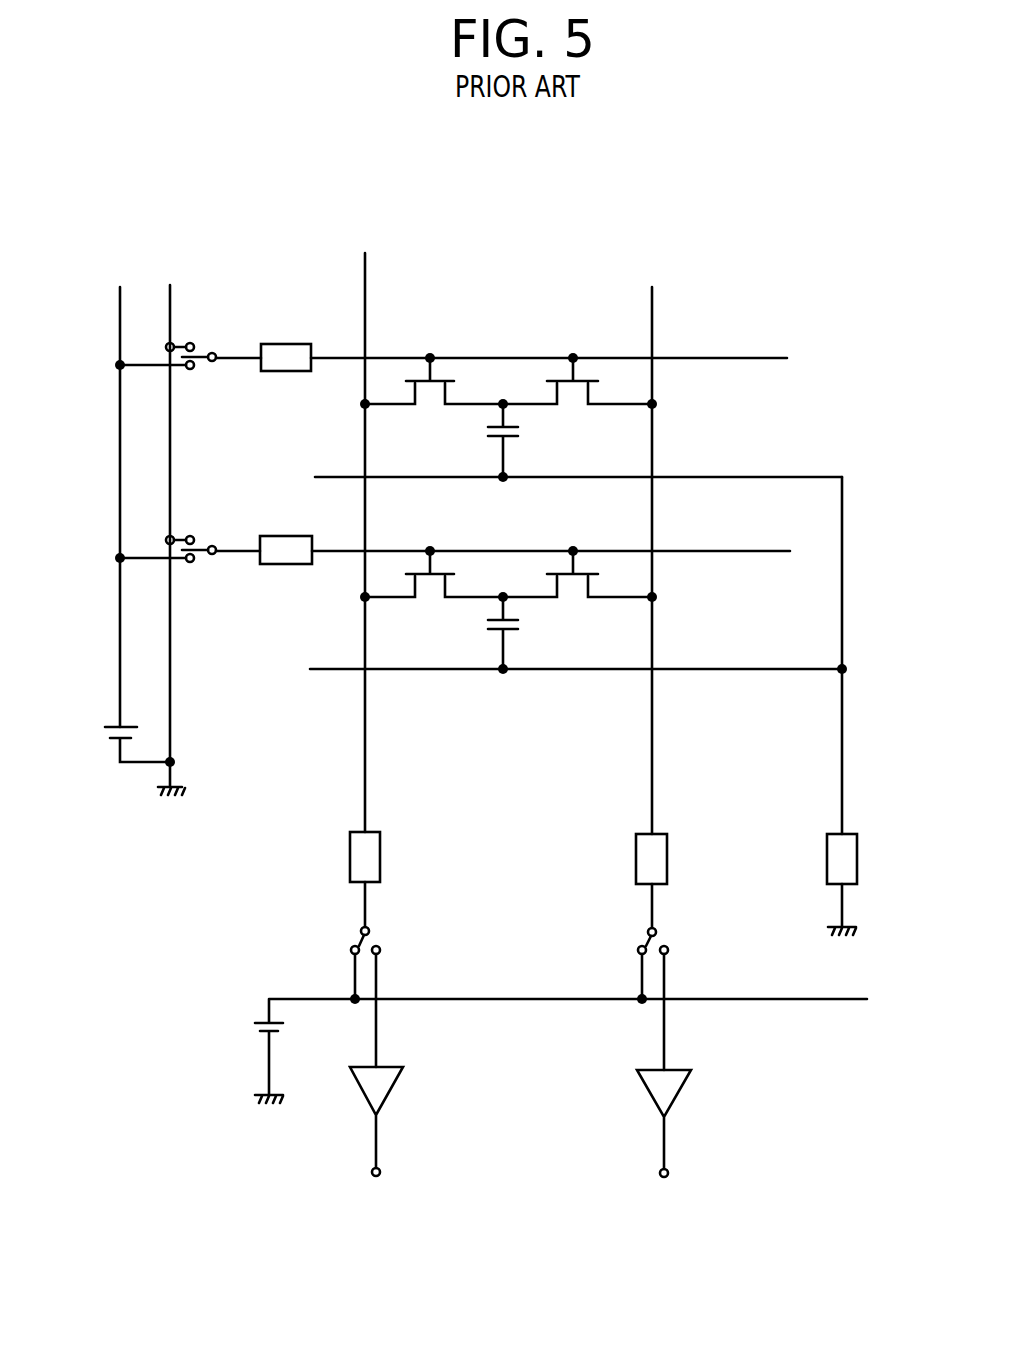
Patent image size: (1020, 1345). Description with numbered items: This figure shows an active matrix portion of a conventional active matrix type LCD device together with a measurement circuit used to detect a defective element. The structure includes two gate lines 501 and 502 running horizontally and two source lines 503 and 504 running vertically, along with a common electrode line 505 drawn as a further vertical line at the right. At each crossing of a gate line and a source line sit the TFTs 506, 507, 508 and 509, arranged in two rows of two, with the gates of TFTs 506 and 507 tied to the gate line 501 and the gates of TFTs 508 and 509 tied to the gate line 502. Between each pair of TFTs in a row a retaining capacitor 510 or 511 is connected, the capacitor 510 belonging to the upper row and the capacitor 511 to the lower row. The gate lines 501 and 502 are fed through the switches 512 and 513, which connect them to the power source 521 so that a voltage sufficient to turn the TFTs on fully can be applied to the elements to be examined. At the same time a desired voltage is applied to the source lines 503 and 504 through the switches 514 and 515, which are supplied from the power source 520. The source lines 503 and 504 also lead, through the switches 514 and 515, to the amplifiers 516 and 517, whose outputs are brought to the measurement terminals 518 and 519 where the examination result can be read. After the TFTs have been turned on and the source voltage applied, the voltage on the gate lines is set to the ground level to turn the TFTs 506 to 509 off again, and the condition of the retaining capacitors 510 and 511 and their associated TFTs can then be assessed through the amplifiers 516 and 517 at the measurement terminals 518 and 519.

The gate line 501 is at (787, 360).
The gate line 502 is at (778, 553).
The source line 503 is at (363, 812).
The source line 504 is at (651, 814).
The common electrode line 505 is at (841, 803).
The TFT 506 is at (455, 380).
The TFT 507 is at (598, 380).
The TFT 508 is at (455, 573).
The TFT 509 is at (598, 573).
The retaining capacitor 510 is at (510, 440).
The retaining capacitor 511 is at (510, 633).
The switch 512 is at (205, 352).
The switch 513 is at (205, 546).
The switch 514 is at (370, 940).
The switch 515 is at (657, 942).
The amplifier 516 is at (385, 1067).
The amplifier 517 is at (677, 1070).
The measurement terminal 518 is at (376, 1176).
The measurement terminal 519 is at (664, 1177).
The power source 520 is at (264, 1023).
The power source 521 is at (106, 728).